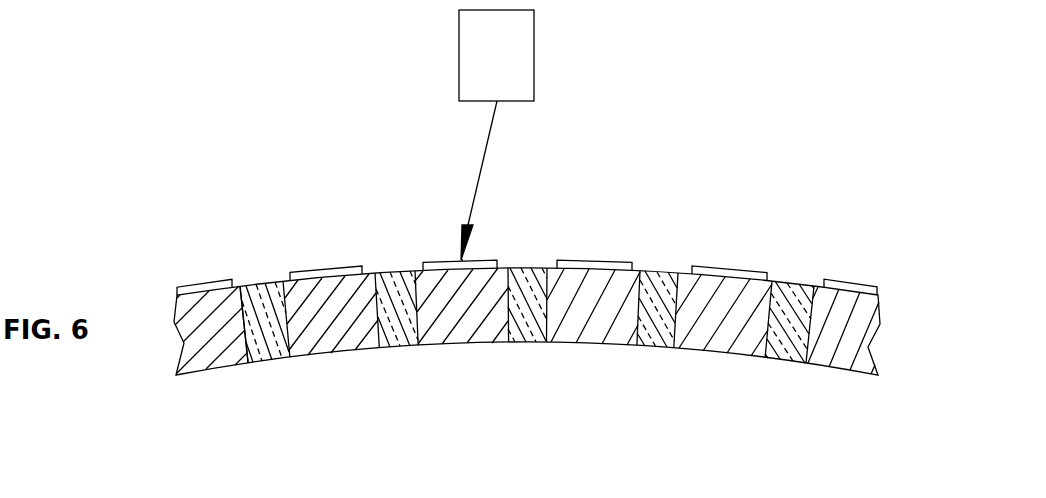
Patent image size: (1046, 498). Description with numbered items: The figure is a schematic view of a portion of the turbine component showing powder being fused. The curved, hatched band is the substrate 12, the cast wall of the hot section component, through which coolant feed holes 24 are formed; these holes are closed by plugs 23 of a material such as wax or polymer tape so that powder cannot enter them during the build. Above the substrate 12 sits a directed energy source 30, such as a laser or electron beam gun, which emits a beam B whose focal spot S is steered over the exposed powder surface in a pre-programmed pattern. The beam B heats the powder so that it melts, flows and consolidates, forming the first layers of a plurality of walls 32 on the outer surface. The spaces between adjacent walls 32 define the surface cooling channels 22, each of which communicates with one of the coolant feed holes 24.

The substrate 12 is at (873, 353).
The surface cooling channel 22 is at (240, 287).
The plug 23 is at (272, 361).
The coolant feed hole 24 is at (291, 345).
The directed energy source 30 is at (514, 67).
The wall 32 is at (199, 291).
The beam B is at (486, 154).
The focal spot S is at (466, 246).